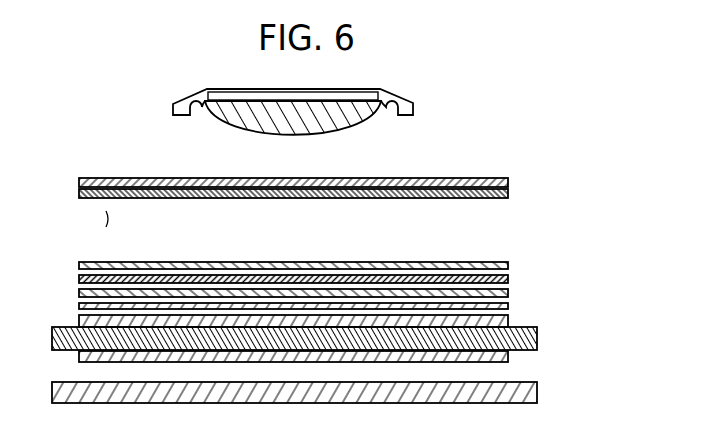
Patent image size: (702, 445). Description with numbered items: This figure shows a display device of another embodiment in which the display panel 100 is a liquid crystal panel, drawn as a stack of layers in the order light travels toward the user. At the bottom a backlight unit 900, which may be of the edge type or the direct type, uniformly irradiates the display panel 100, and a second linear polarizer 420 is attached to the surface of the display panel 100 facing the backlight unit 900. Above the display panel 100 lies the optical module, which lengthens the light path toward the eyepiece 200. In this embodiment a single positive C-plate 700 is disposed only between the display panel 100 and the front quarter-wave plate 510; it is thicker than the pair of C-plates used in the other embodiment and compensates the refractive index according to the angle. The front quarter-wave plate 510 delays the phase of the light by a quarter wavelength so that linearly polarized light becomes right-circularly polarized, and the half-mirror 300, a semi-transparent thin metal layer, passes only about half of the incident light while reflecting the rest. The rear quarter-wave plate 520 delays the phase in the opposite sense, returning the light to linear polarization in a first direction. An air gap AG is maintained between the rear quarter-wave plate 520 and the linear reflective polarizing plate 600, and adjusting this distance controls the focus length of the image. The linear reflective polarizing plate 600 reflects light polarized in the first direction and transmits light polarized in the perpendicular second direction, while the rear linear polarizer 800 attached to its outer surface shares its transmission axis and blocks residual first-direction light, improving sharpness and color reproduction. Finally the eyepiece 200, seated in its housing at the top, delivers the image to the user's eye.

The eyepiece 200 is at (375, 118).
The rear linear polarizer 800 is at (508, 182).
The linear reflective polarizing plate 600 is at (508, 193).
The air gap AG is at (105, 218).
The rear quarter-wave plate 520 is at (508, 265).
The half-mirror 300 is at (508, 279).
The front quarter-wave plate 510 is at (508, 293).
The positive C-plate 700 is at (79, 305).
The second linear polarizer 420 is at (508, 320).
The display panel 100 is at (537, 338).
The backlight unit 900 is at (537, 392).